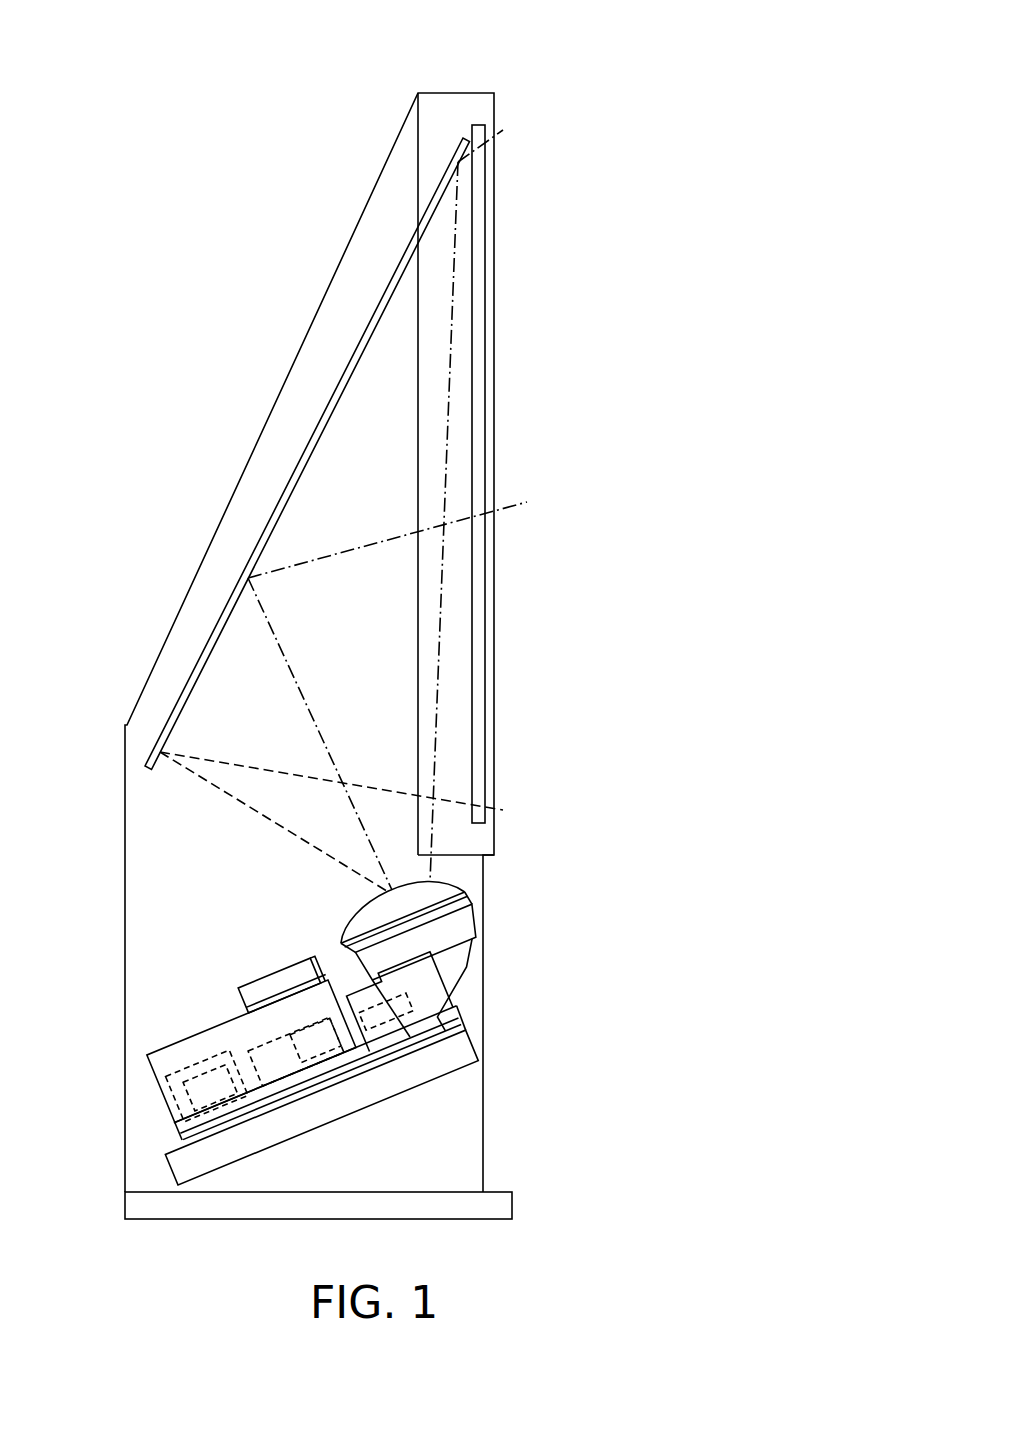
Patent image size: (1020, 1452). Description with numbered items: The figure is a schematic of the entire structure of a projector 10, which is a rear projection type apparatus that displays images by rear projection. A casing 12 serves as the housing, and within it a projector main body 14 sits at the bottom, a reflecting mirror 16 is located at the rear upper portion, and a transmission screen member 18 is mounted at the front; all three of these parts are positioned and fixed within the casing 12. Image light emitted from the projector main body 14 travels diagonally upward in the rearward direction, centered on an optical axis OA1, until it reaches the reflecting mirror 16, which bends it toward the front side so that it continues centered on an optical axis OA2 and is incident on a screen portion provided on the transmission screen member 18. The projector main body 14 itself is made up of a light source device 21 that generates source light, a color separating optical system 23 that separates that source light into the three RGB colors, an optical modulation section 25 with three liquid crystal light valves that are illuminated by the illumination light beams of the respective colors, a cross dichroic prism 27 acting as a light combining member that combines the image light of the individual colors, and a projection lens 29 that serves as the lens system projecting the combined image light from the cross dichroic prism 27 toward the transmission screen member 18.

The projector 10 is at (657, 38).
The casing 12 is at (283, 385).
The projector main body 14 is at (394, 1083).
The reflecting mirror 16 is at (190, 668).
The transmission screen member 18 is at (484, 234).
The light source device 21 is at (192, 1067).
The color separating optical system 23 is at (287, 1097).
The optical modulation section 25 is at (300, 1033).
The cross dichroic prism 27 is at (438, 1017).
The projection lens 29 is at (440, 942).
The optical axis OA1 is at (285, 650).
The optical axis OA2 is at (325, 555).